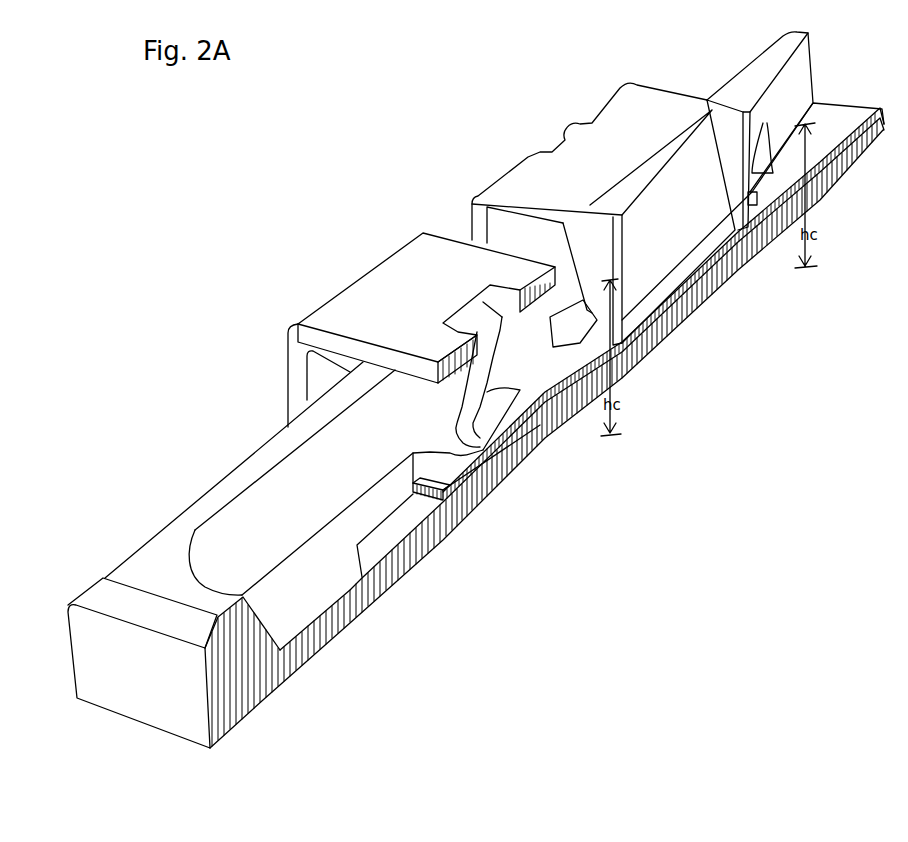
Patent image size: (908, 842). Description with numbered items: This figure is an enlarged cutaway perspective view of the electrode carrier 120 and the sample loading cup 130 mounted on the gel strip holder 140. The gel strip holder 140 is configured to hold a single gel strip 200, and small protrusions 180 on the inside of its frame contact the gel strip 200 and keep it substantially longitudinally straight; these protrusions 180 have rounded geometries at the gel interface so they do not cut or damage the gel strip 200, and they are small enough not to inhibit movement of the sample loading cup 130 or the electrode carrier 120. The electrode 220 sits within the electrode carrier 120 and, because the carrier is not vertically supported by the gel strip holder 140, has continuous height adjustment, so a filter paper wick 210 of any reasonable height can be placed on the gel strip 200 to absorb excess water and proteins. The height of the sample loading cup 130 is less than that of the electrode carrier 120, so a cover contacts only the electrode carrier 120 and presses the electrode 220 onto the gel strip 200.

The electrode carrier 120 is at (323, 307).
The sample loading cup 130 is at (528, 160).
The gel strip holder 140 is at (135, 702).
The protrusion 180 is at (763, 143).
The gel strip 200 is at (437, 475).
The filter paper wick 210 is at (498, 480).
The electrode 220 is at (545, 438).